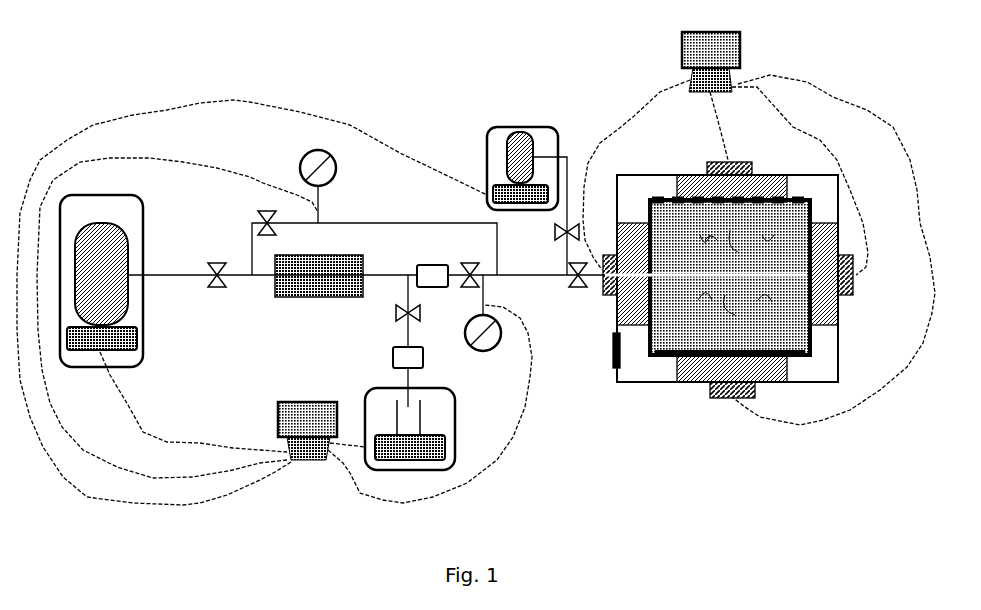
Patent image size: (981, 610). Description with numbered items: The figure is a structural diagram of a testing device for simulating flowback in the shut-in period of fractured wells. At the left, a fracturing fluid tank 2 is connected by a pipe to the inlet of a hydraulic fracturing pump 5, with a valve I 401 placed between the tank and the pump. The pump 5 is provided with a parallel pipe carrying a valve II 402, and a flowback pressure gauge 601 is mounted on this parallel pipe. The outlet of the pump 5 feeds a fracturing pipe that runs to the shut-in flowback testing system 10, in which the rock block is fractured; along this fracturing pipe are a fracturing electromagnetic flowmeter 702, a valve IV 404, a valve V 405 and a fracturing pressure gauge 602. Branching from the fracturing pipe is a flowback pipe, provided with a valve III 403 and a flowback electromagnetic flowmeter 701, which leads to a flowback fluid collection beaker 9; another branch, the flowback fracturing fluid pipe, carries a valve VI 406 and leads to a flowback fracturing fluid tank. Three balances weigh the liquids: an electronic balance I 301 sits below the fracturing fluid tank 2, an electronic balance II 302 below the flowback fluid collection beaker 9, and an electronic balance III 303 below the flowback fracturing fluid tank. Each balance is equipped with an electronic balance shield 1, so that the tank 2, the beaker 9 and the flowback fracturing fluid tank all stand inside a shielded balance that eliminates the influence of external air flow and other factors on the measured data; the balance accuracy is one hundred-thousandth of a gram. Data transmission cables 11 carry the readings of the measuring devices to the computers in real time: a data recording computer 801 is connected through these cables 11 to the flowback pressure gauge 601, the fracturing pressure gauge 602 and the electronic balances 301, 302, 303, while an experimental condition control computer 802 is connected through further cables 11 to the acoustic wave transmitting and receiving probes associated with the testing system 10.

The electronic balance shield 1 is at (142, 213).
The fracturing fluid tank 2 is at (128, 252).
The hydraulic fracturing pump 5 is at (322, 298).
The flowback fluid collection beaker 9 is at (393, 417).
The shut-in flowback testing system 10 is at (628, 373).
The data transmission cable 11 is at (62, 425).
The electronic balance I 301 is at (132, 328).
The electronic balance II 302 is at (437, 433).
The electronic balance III 303 is at (497, 183).
The valve I 401 is at (217, 292).
The valve II 402 is at (257, 219).
The valve III 403 is at (394, 313).
The valve IV 404 is at (472, 262).
The valve V 405 is at (578, 292).
The valve VI 406 is at (553, 233).
The flowback pressure gauge 601 is at (312, 150).
The fracturing pressure gauge 602 is at (480, 354).
The flowback electromagnetic flowmeter 701 is at (390, 352).
The fracturing electromagnetic flowmeter 702 is at (442, 288).
The data recording computer 801 is at (302, 400).
The experimental condition control computer 802 is at (742, 52).